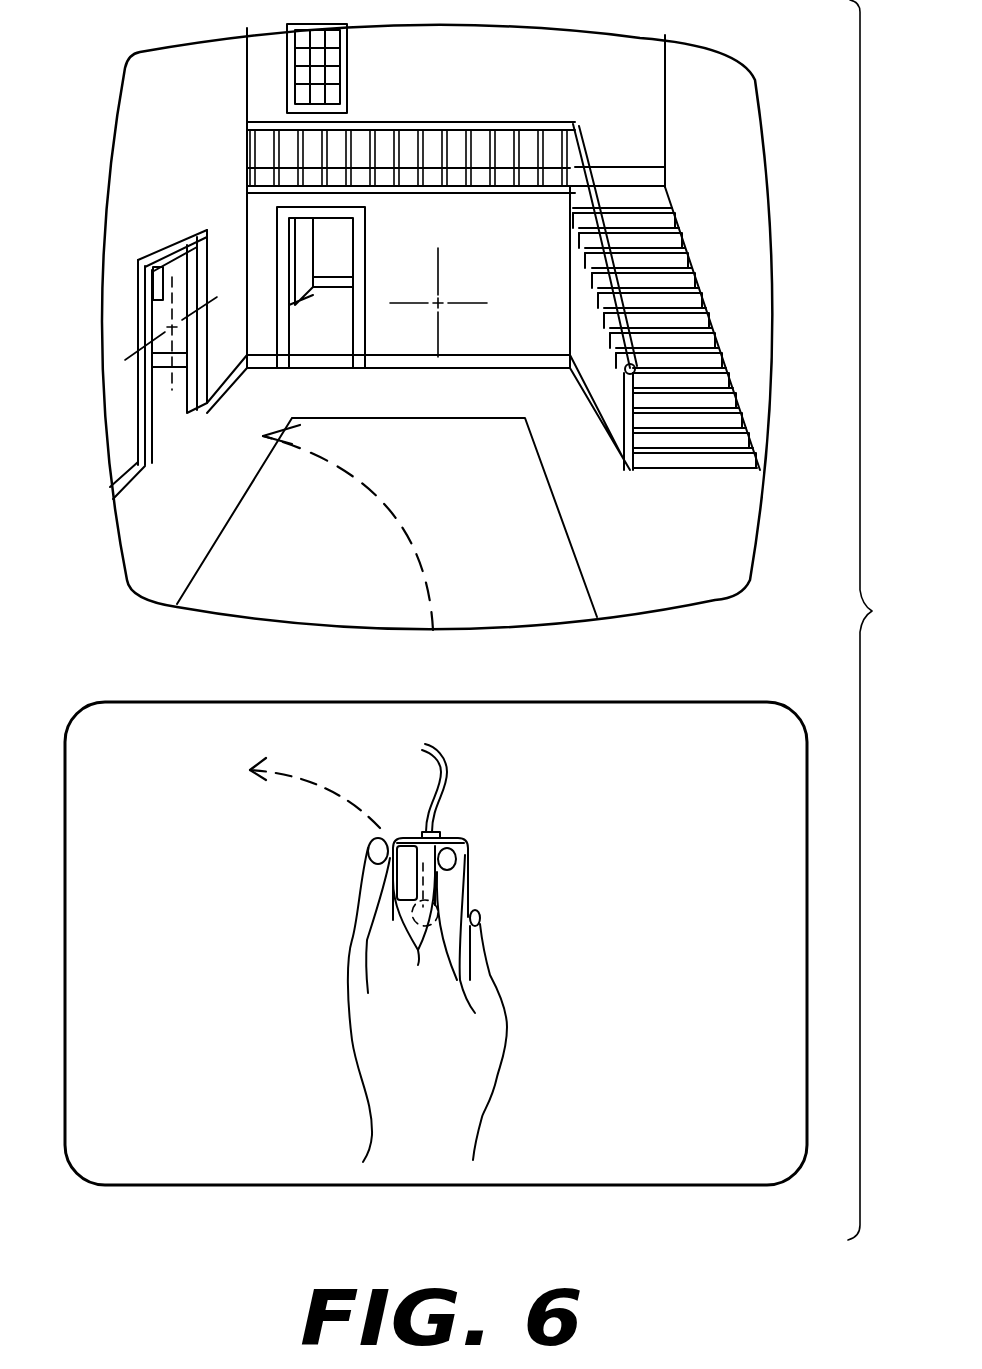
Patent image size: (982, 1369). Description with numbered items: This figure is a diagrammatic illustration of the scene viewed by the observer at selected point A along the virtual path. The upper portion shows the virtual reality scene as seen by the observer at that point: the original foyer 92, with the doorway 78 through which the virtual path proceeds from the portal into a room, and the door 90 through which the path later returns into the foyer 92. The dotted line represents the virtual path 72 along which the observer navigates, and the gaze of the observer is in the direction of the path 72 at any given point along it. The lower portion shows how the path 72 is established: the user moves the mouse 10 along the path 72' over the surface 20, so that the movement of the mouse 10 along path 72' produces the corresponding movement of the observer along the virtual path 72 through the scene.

The mouse 10 is at (467, 862).
The surface 20 is at (704, 701).
The virtual path 72 is at (376, 527).
The mouse path 72' is at (321, 780).
The doorway 78 is at (143, 318).
The door 90 is at (365, 240).
The foyer 92 is at (681, 545).
The selected point along the virtual path A is at (872, 620).